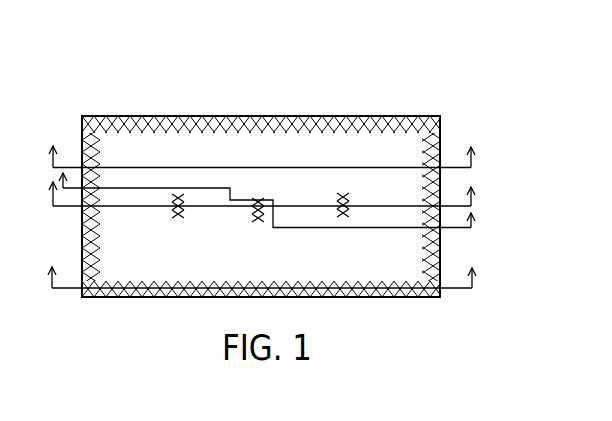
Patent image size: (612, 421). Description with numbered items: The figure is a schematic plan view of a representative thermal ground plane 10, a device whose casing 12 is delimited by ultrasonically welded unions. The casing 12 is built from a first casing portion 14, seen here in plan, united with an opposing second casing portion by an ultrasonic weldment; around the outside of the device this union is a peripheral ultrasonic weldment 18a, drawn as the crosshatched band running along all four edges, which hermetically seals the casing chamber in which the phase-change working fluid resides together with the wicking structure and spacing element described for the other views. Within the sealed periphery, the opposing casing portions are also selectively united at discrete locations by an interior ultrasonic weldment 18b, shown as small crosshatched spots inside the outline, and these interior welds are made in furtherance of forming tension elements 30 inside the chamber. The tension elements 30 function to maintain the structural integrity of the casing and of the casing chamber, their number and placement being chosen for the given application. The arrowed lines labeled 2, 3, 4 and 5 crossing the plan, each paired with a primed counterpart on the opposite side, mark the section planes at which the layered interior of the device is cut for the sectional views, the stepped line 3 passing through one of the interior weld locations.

The thermal ground plane 10 is at (261, 159).
The casing 12 is at (392, 158).
The first casing portion 14 is at (150, 268).
The peripheral ultrasonic weldment 18a is at (284, 121).
The interior ultrasonic weldment 18b is at (178, 218).
The tension elements 30 is at (254, 226).
The section line 2-2' 2 is at (265, 156).
The section line 3-3' 3 is at (270, 199).
The section line 4-4' 4 is at (265, 193).
The section line 5-5' 5 is at (265, 276).